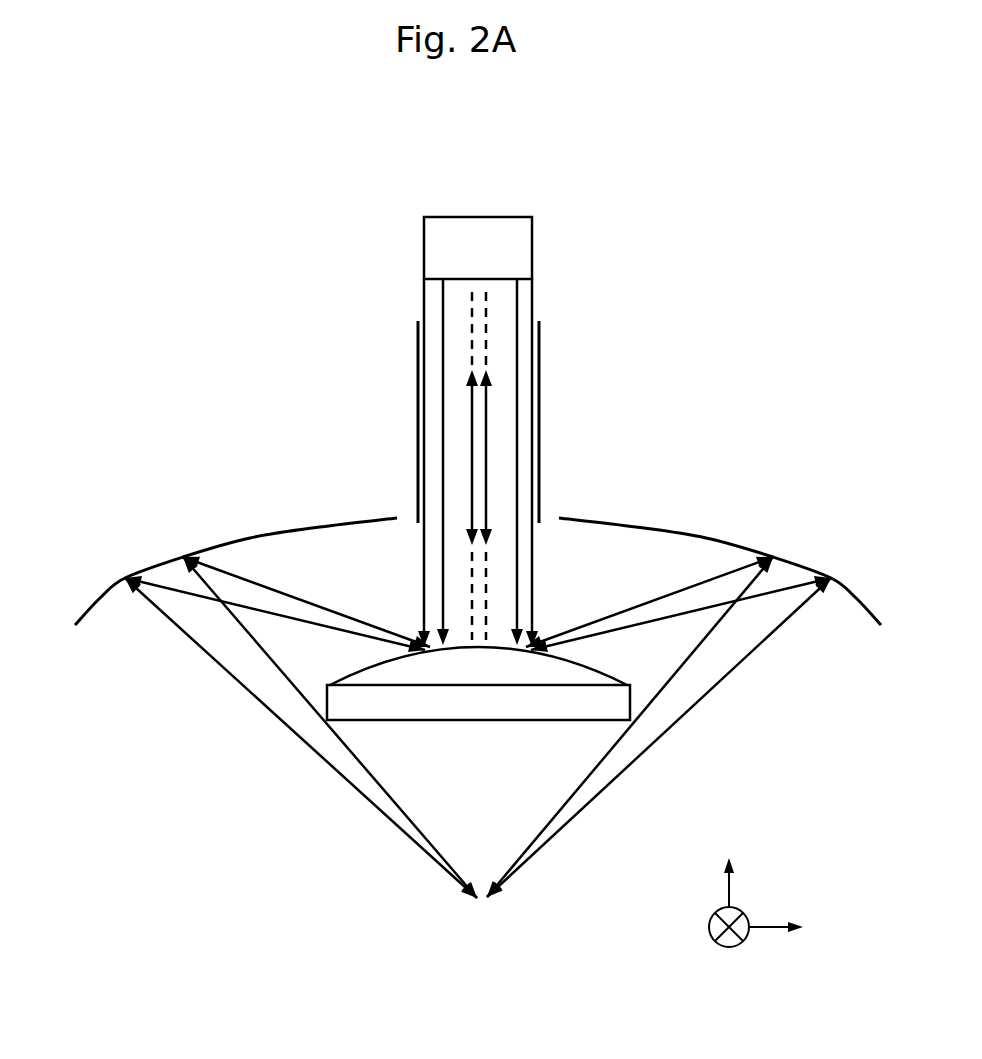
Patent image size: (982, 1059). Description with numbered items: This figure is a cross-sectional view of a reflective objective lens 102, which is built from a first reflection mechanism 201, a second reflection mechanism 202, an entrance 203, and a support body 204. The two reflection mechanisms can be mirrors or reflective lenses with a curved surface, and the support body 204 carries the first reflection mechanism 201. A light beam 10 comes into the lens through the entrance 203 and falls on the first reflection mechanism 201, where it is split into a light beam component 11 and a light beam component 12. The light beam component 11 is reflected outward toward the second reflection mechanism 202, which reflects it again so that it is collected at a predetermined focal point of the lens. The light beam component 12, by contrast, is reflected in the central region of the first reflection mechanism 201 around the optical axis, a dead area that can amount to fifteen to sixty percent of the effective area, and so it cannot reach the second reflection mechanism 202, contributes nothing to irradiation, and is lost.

The reflective objective lens 102 is at (90, 200).
The light beam 10 is at (527, 233).
The light beam component 11 is at (532, 288).
The light beam component 12 is at (484, 365).
The first reflection mechanism 201 is at (407, 663).
The second reflection mechanism 202 is at (250, 538).
The entrance 203 is at (416, 330).
The support body 204 is at (447, 702).